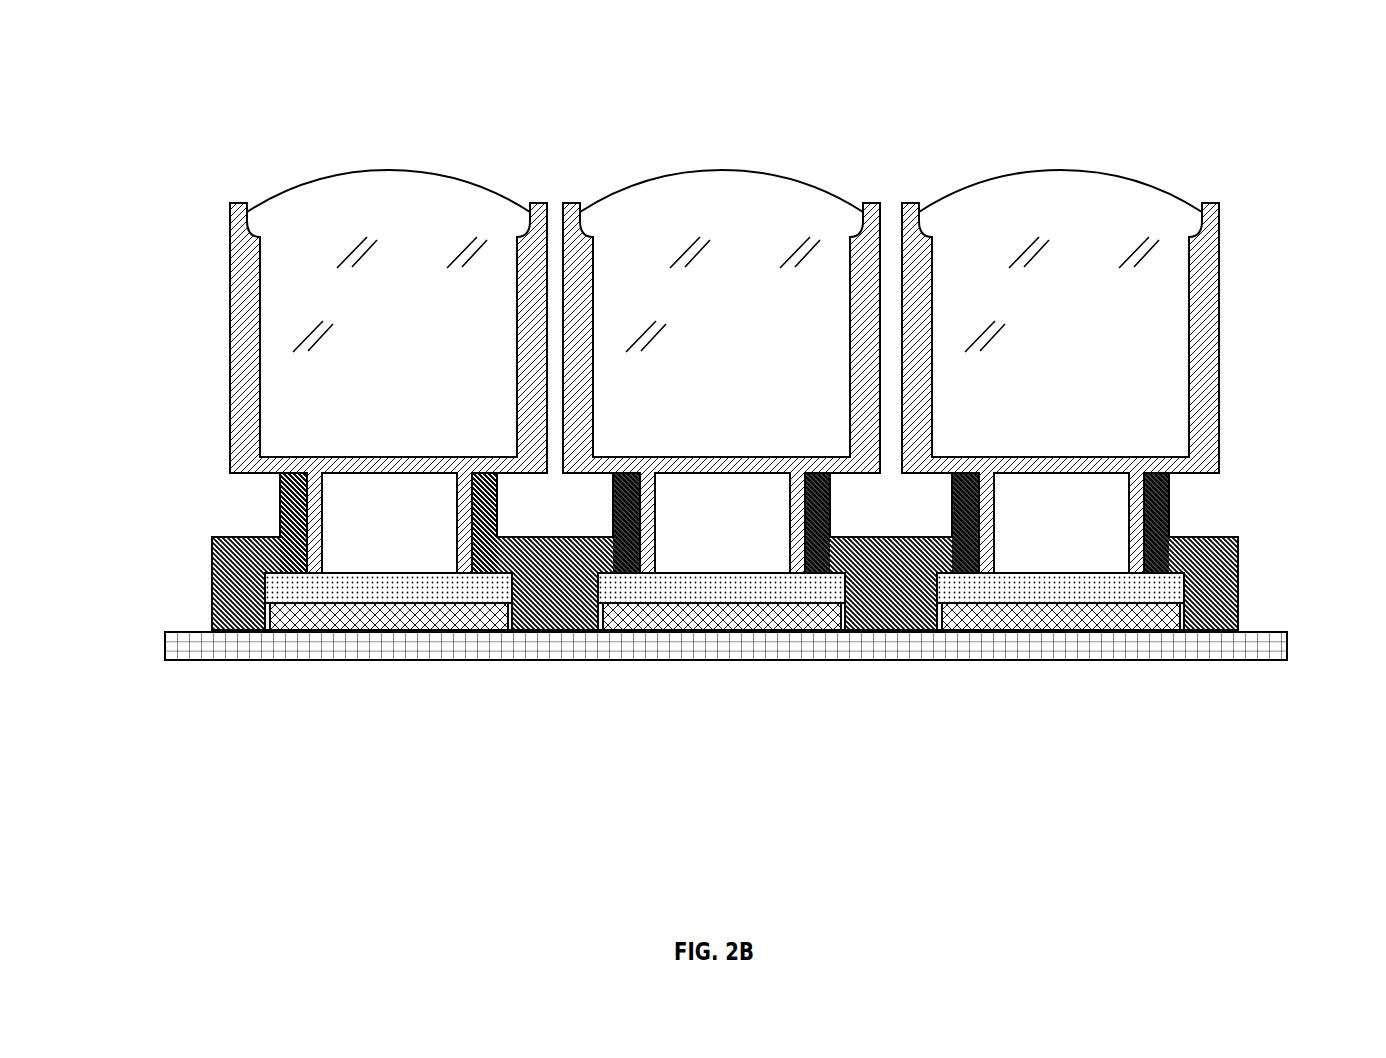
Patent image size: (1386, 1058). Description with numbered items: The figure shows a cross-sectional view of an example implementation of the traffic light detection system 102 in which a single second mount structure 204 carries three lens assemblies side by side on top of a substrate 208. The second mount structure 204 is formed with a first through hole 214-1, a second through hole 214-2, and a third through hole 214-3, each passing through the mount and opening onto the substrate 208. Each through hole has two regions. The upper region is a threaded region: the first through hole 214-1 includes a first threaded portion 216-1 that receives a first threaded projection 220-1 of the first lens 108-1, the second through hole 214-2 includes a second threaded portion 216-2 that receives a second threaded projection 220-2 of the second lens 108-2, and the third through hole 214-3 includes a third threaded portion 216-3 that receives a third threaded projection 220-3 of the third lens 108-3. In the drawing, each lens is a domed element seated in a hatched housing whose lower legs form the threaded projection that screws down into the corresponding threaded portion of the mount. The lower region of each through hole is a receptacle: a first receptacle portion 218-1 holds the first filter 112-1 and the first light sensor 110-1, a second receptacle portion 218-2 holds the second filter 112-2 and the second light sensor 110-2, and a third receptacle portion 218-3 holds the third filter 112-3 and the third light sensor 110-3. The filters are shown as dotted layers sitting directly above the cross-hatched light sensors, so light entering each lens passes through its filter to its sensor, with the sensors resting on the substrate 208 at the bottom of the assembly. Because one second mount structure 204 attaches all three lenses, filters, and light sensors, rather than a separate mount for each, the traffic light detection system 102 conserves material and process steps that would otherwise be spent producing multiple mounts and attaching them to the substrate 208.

The traffic light detection system 102 is at (425, 124).
The first lens 108-1 is at (514, 204).
The second lens 108-2 is at (836, 205).
The third lens 108-3 is at (1190, 208).
The first threaded projection 220-1 is at (450, 475).
The second threaded projection 220-2 is at (786, 472).
The third threaded projection 220-3 is at (1128, 472).
The second mount structure 204 is at (213, 578).
The first threaded portion 216-1 is at (472, 523).
The second threaded portion 216-2 is at (803, 525).
The third threaded portion 216-3 is at (1142, 525).
The first filter 112-1 is at (265, 587).
The second filter 112-2 is at (614, 604).
The third filter 112-3 is at (1013, 604).
The first light sensor 110-1 is at (277, 630).
The second light sensor 110-2 is at (682, 632).
The third light sensor 110-3 is at (1075, 632).
The first through hole 214-1 is at (322, 630).
The second through hole 214-2 is at (718, 632).
The third through hole 214-3 is at (1148, 632).
The first receptacle portion 218-1 is at (506, 625).
The second receptacle portion 218-2 is at (840, 628).
The third receptacle portion 218-3 is at (1197, 632).
The substrate 208 is at (1273, 633).